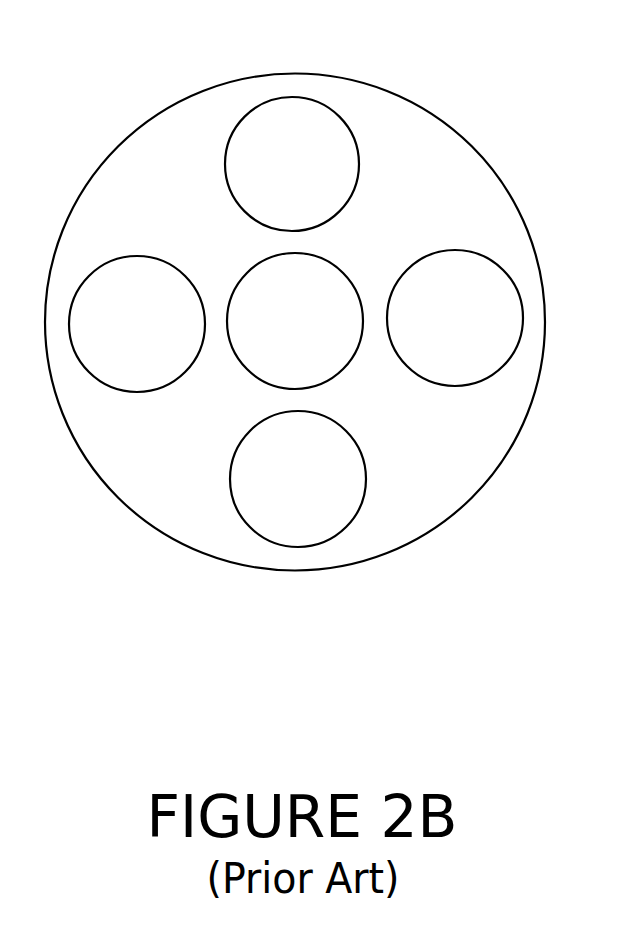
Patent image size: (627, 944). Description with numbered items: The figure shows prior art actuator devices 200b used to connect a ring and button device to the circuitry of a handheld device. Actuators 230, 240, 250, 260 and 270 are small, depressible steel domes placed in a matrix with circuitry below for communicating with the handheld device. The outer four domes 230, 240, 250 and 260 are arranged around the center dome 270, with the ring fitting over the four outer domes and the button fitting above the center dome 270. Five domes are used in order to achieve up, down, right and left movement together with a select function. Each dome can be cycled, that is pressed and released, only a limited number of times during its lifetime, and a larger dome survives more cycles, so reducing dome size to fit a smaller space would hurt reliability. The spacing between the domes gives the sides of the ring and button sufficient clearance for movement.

The actuator devices 200b is at (405, 93).
The actuator 230 is at (292, 164).
The actuator 240 is at (455, 318).
The actuator 250 is at (298, 479).
The actuator 260 is at (137, 324).
The actuator 270 is at (295, 321).